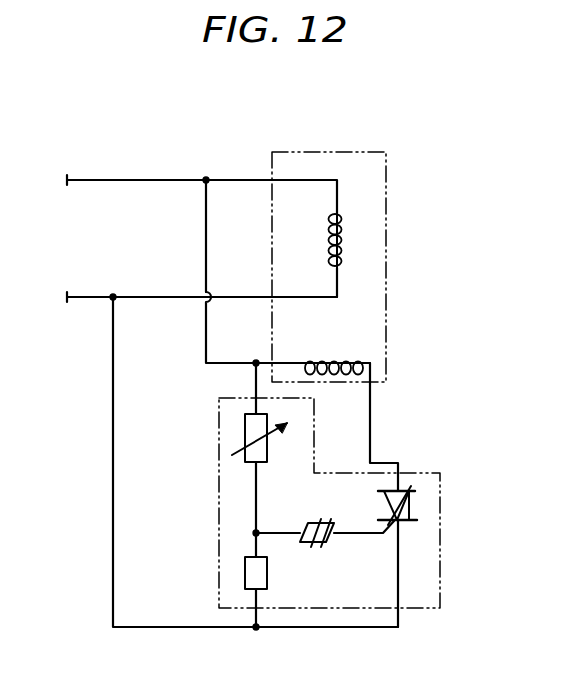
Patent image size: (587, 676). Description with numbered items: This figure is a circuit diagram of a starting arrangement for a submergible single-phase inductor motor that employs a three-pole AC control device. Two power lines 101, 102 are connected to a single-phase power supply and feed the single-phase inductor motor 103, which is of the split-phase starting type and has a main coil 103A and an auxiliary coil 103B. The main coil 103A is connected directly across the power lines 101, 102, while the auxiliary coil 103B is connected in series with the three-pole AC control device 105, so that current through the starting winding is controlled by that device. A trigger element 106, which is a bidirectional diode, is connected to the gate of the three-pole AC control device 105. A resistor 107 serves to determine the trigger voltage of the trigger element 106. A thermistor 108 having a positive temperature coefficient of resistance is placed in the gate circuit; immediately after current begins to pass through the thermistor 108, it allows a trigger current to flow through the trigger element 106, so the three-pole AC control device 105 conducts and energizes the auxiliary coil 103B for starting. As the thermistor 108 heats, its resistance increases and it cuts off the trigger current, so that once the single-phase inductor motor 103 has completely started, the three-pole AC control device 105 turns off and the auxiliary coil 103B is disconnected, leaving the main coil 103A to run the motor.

The power line 101 is at (123, 178).
The power line 102 is at (125, 296).
The single-phase inductor motor 103 is at (330, 239).
The main coil 103A is at (343, 233).
The auxiliary coil 103B is at (333, 361).
The three-pole AC control device 105 is at (409, 505).
The trigger element 106 is at (320, 545).
The resistor 107 is at (245, 573).
The thermistor 108 is at (245, 432).